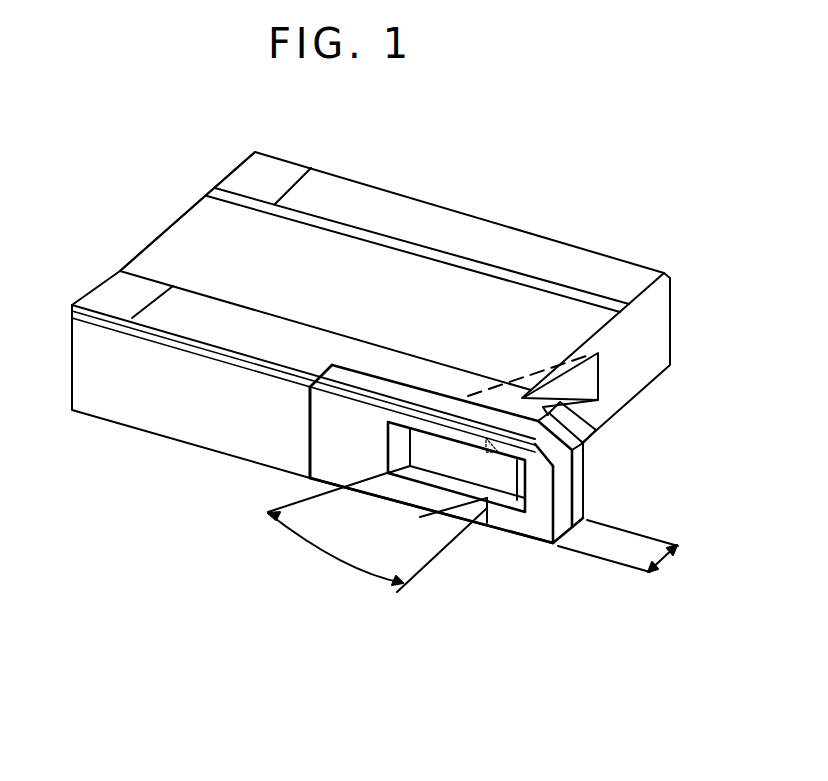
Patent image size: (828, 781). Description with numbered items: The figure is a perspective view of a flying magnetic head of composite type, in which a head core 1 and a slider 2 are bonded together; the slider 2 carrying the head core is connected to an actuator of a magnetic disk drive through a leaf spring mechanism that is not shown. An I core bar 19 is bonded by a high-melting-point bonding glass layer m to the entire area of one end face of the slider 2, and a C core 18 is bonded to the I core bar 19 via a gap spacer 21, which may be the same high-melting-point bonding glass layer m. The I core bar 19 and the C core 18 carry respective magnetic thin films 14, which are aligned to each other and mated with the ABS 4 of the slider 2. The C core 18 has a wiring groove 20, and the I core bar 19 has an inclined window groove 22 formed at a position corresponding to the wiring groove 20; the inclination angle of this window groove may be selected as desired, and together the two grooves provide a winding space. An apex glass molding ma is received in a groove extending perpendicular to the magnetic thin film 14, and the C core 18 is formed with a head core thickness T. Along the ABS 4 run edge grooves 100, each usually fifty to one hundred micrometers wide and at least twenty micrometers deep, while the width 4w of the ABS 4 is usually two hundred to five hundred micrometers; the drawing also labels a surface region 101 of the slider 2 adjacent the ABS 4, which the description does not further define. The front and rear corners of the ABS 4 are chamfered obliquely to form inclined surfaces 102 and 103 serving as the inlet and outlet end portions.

The head core 1 is at (473, 540).
The slider 2 is at (150, 440).
The ABS 4 is at (348, 196).
The width of the ABS 4w is at (293, 322).
The magnetic thin film 14 is at (413, 388).
The C core 18 is at (540, 530).
The I core bar 19 is at (322, 452).
The wiring groove 20 is at (512, 502).
The gap spacer 21 is at (515, 405).
The inclined window groove 22 is at (605, 397).
The edge groove 100 is at (200, 352).
The top surface 101 is at (188, 242).
The inclined surface 102 is at (260, 170).
The inclined surface 103 is at (580, 431).
The high-melting-point bonding glass layer m is at (350, 350).
The apex glass molding ma is at (486, 440).
The head core thickness T is at (627, 552).